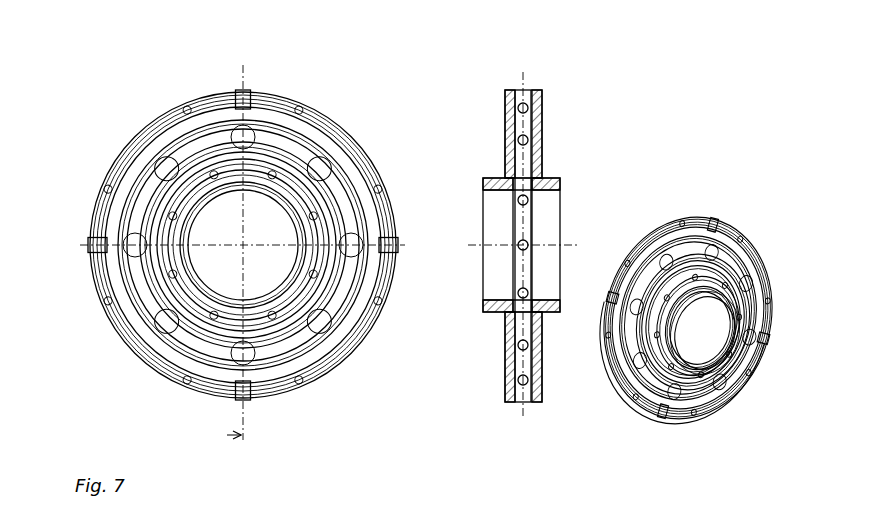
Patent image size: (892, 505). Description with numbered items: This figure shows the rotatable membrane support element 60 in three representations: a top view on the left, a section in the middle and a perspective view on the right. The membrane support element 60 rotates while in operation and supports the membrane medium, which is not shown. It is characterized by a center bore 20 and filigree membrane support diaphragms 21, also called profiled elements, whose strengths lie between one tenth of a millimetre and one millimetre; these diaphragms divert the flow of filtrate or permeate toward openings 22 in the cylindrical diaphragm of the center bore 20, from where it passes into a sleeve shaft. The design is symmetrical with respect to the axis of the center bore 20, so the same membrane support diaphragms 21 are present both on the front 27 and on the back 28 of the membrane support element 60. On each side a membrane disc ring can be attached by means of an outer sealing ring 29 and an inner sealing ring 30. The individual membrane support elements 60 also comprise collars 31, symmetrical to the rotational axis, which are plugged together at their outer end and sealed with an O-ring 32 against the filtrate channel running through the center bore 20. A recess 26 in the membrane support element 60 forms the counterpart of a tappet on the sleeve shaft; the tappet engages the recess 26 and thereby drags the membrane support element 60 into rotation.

The membrane support element 60 is at (123, 113).
The membrane support diaphragms 21 is at (298, 122).
The center bore 20 is at (263, 223).
The O-ring 32 is at (190, 280).
The back 28 is at (558, 222).
The front 27 is at (478, 270).
The collars 31 is at (492, 311).
The openings 22 is at (705, 316).
The outer sealing ring 29 is at (746, 241).
The recess 26 is at (691, 352).
The inner sealing ring 30 is at (691, 385).